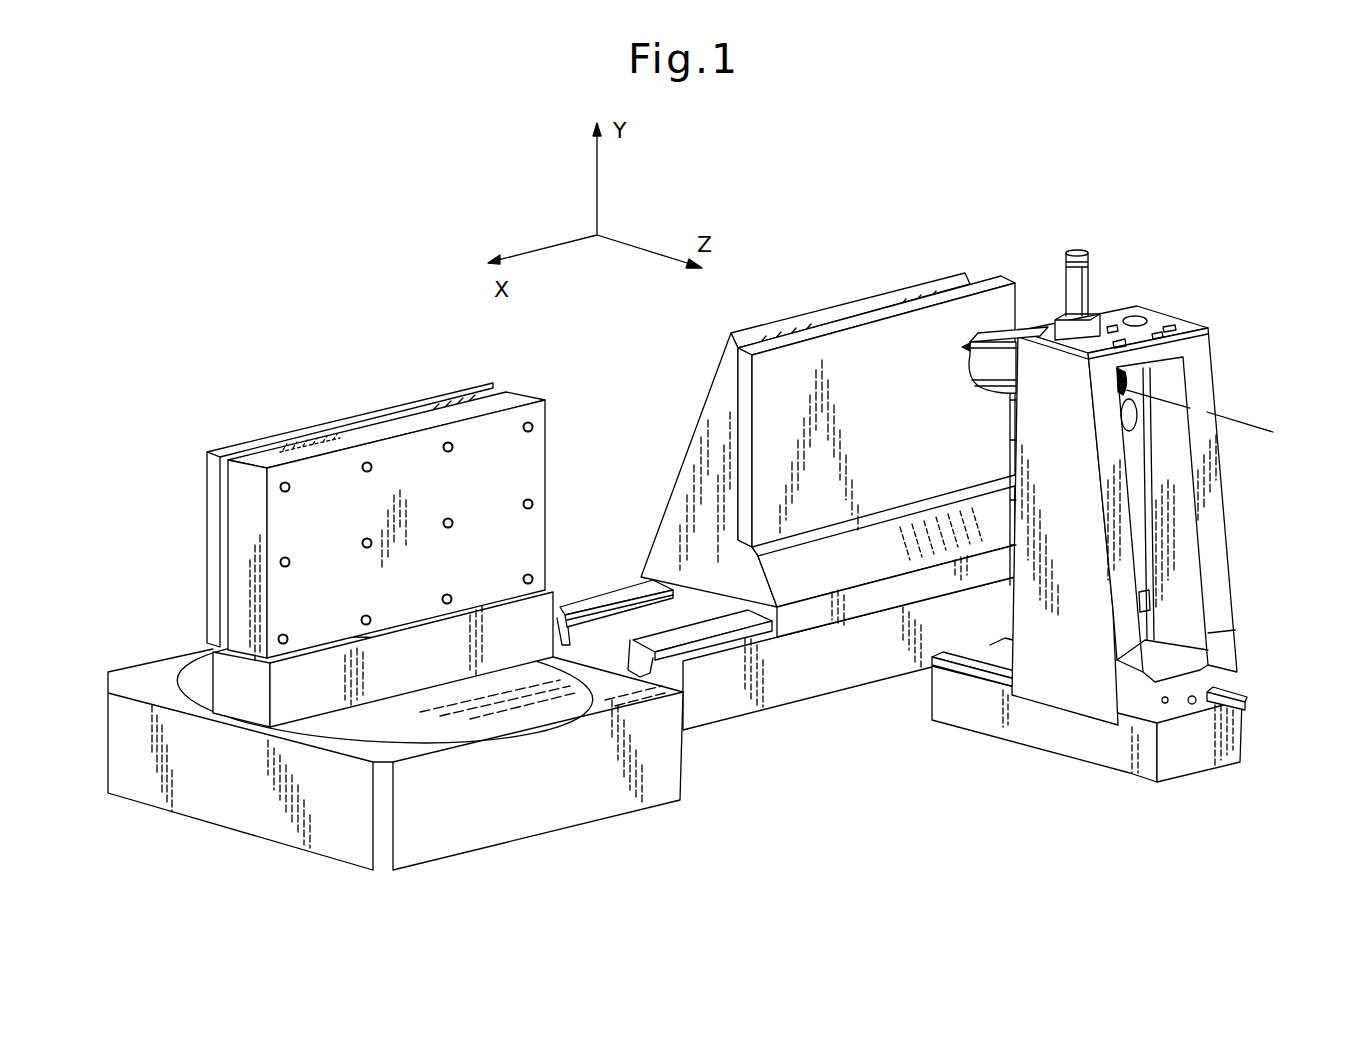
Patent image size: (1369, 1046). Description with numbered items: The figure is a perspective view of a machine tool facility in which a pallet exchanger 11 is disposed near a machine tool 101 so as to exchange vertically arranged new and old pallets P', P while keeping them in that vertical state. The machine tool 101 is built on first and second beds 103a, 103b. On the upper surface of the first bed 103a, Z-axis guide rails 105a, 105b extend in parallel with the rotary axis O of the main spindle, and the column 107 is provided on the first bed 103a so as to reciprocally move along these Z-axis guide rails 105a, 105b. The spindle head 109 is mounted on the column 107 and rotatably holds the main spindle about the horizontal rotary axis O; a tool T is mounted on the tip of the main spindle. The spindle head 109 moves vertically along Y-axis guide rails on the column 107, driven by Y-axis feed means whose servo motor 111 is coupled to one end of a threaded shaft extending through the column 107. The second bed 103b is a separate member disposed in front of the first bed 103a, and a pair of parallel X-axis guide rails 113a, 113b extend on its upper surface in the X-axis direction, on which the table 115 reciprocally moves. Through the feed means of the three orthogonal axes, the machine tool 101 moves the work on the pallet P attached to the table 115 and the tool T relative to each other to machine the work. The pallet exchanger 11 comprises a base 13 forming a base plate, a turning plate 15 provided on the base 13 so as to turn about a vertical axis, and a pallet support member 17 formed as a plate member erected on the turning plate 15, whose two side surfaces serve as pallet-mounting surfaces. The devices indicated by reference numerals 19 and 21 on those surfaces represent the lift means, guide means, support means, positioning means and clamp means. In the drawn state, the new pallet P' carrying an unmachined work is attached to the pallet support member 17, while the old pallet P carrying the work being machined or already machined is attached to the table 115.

The pallet exchanger 11 is at (395, 539).
The base 13 is at (580, 806).
The turning plate 15 is at (480, 720).
The pallet support member 17 is at (363, 437).
The devices on pallet-mounting surface 19 is at (366, 472).
The devices on pallet-mounting surface 21 is at (453, 522).
The machine tool 101 is at (940, 483).
The first bed 103a is at (1057, 738).
The second bed 103b is at (813, 683).
The Z-axis guide rail 105a is at (978, 673).
The Z-axis guide rail 105b is at (1245, 697).
The column 107 is at (1215, 523).
The spindle head 109 is at (993, 365).
The servo motor 111 is at (1088, 282).
The X-axis guide rail 113a is at (707, 640).
The X-axis guide rail 113b is at (604, 610).
The table 115 is at (710, 415).
The old pallet P is at (887, 365).
The new pallet P' is at (325, 515).
The tool T is at (962, 347).
The rotary axis O is at (1216, 421).